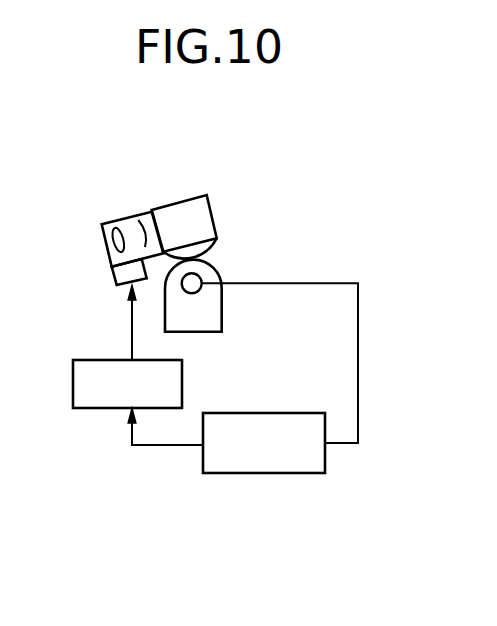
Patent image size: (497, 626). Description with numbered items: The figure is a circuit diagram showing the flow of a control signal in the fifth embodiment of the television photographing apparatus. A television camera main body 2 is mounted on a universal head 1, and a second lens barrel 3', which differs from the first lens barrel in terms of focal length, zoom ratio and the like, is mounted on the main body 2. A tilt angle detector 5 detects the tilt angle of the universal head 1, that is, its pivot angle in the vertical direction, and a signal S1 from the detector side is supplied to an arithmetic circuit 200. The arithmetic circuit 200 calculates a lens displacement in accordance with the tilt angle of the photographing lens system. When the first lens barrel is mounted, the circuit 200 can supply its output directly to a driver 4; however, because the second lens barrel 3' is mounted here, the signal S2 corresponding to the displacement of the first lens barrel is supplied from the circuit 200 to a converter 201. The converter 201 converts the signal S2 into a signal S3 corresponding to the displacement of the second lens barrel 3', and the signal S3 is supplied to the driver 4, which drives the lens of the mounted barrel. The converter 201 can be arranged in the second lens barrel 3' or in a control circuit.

The universal head 1 is at (218, 272).
The television camera main body 2 is at (197, 203).
The second lens barrel 3' is at (133, 216).
The driver 4 is at (112, 272).
The tilt angle detector 5 is at (200, 290).
The arithmetic circuit 200 is at (325, 460).
The converter 201 is at (103, 410).
The signal S1 is at (358, 350).
The signal corresponding to the displacement of the first lens barrel S2 is at (158, 447).
The signal corresponding to the displacement of the second lens barrel S3 is at (131, 313).